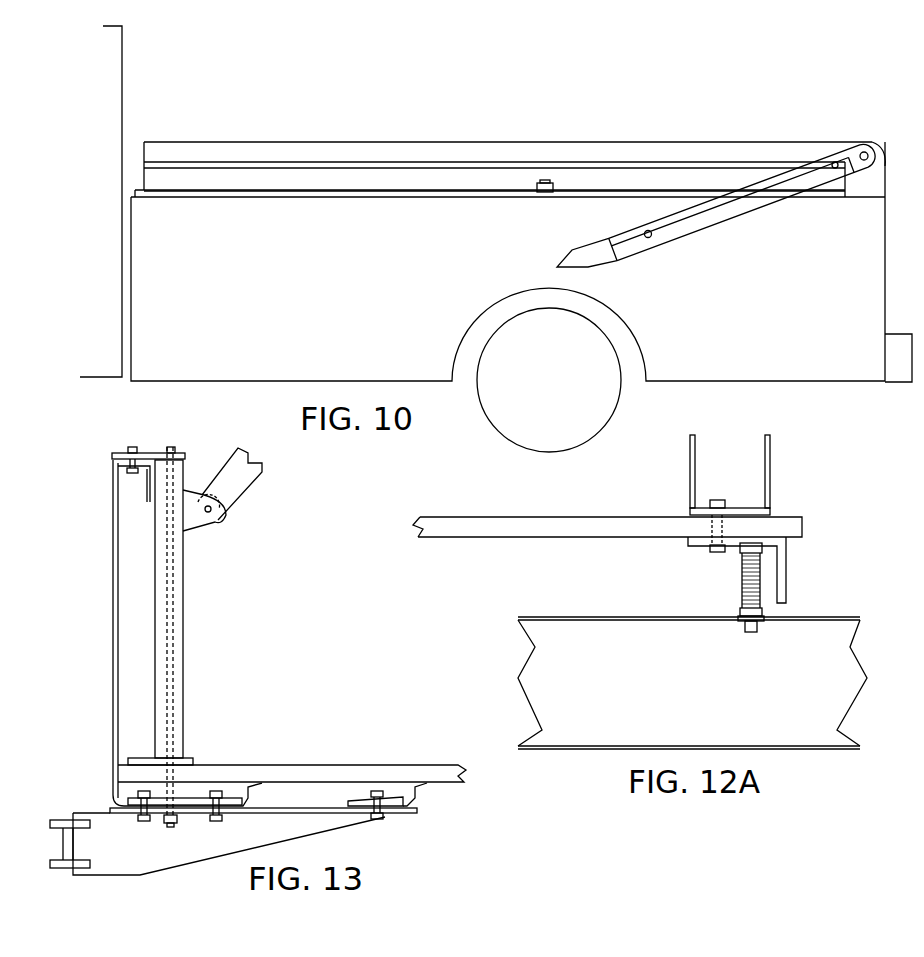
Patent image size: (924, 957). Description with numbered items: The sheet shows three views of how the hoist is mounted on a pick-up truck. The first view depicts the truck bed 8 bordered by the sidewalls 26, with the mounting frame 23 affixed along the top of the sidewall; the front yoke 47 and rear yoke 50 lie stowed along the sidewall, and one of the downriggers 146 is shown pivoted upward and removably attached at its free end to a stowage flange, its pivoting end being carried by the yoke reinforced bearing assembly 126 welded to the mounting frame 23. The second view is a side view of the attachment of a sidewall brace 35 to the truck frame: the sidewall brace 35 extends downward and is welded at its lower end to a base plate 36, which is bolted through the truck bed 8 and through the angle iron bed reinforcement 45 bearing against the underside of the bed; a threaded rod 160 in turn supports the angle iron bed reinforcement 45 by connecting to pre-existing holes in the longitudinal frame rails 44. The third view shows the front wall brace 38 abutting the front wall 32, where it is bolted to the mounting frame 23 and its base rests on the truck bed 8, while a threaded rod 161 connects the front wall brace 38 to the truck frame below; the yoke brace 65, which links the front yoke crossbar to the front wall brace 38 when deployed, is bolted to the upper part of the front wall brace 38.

In FIG. 12A, the bed 8 is at (775, 525).
In FIG. 13, the bed 8 is at (355, 772).
In FIG. 10, the mounting frame 23 is at (405, 193).
In FIG. 13, the mounting frame 23 is at (112, 457).
In FIG. 10, the sidewalls 26 is at (386, 270).
In FIG. 13, the front wall 32 is at (115, 673).
In FIG. 12A, the sidewall braces 35 is at (768, 462).
In FIG. 12A, the base plate 36 is at (766, 512).
In FIG. 13, the front wall brace 38 is at (177, 626).
In FIG. 12A, the longitudinal frame rails 44 is at (645, 629).
In FIG. 12A, the angle iron bed reinforcement 45 is at (777, 578).
In FIG. 10, the front yoke 47 is at (222, 182).
In FIG. 10, the rear yoke 50 is at (343, 156).
In FIG. 13, the yoke brace 65 is at (222, 497).
In FIG. 10, the yoke reinforced bearing assembly 126 is at (870, 178).
In FIG. 10, the downriggers 146 is at (750, 198).
In FIG. 12A, the threaded rod 160 is at (745, 577).
In FIG. 13, the threaded rod 161 is at (177, 792).